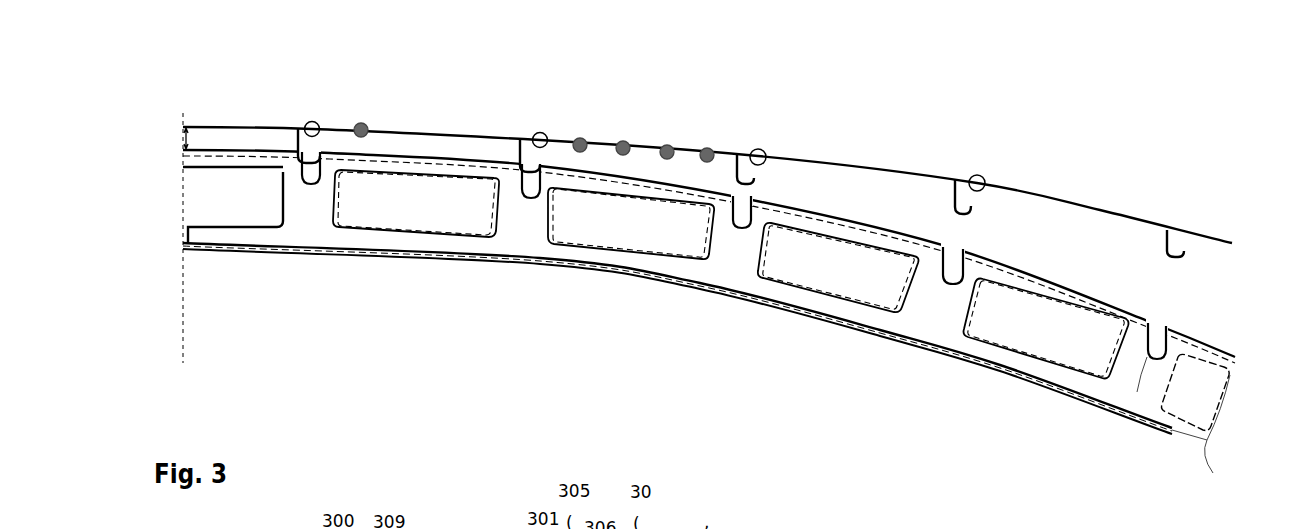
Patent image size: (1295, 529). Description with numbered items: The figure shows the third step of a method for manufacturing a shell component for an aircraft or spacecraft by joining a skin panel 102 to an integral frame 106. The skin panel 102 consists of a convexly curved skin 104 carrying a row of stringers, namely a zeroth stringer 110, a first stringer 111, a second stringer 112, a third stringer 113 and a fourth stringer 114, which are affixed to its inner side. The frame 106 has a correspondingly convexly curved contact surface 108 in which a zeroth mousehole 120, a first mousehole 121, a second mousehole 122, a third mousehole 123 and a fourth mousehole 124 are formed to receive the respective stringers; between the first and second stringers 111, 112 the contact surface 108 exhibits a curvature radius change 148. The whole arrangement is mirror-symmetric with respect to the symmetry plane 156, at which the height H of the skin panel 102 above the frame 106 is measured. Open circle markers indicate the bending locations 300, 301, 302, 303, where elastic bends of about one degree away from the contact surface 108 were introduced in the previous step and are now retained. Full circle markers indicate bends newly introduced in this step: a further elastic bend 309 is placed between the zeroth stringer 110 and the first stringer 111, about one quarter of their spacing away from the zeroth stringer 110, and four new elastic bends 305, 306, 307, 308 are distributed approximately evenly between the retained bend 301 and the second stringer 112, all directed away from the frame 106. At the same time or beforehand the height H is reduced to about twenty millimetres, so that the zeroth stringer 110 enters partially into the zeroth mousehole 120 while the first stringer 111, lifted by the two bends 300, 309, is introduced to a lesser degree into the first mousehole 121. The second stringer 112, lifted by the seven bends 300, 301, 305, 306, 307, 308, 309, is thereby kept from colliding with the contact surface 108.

The skin panel 102 is at (1142, 180).
The skin 104 is at (1073, 205).
The integral frame 106 is at (997, 370).
The contact surface 108 is at (868, 215).
The zeroth stringer 110 is at (298, 142).
The first stringer 111 is at (518, 151).
The second stringer 112 is at (758, 180).
The third stringer 113 is at (968, 206).
The fourth stringer 114 is at (1183, 252).
The zeroth mousehole 120 is at (303, 188).
The first mousehole 121 is at (524, 200).
The second mousehole 122 is at (737, 230).
The third mousehole 123 is at (950, 284).
The fourth mousehole 124 is at (1155, 358).
The curvature radius change 148 is at (618, 291).
The symmetry plane 156 is at (185, 340).
The bending location 300 is at (318, 122).
The bending location 301 is at (537, 133).
The bending location 302 is at (765, 150).
The bending location 303 is at (982, 176).
The elastic bend 305 is at (584, 137).
The elastic bend 306 is at (627, 140).
The elastic bend 307 is at (670, 146).
The elastic bend 308 is at (708, 148).
The elastic bend 309 is at (372, 118).
The height H is at (190, 137).